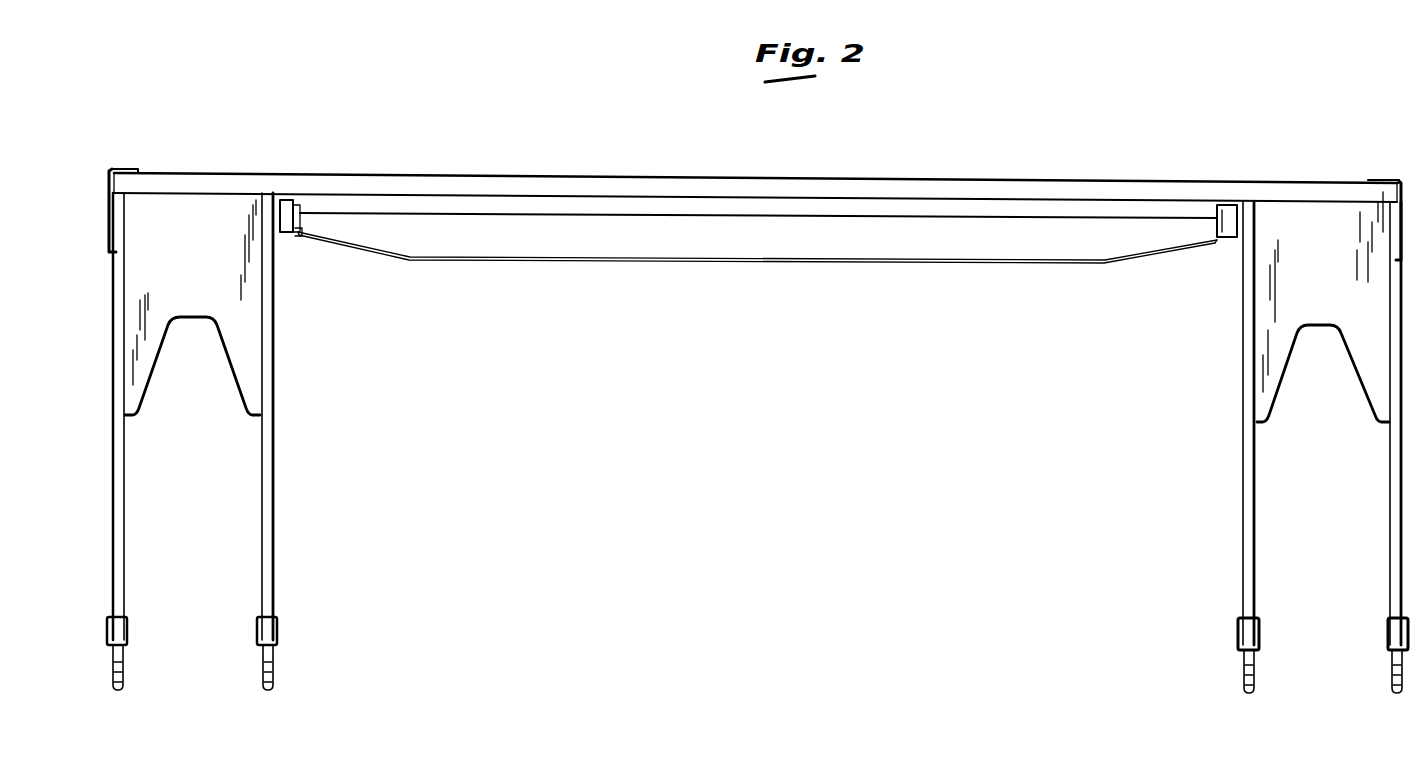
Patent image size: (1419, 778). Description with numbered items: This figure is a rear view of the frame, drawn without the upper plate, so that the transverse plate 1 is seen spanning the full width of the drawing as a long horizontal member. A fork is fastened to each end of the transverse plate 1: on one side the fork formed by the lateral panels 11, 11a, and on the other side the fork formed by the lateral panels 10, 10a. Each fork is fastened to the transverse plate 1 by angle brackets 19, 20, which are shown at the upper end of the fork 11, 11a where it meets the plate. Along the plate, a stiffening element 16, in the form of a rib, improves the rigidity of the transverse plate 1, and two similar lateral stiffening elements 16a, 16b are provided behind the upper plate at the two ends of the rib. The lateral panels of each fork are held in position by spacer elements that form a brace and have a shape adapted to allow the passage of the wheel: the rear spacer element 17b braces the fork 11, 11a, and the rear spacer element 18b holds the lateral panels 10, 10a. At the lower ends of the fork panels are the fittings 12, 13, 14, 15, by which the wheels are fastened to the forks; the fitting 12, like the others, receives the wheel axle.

The transverse plate 1 is at (644, 187).
The angle bracket 19 is at (108, 175).
The angle bracket 20 is at (290, 209).
The stiffening element 16 is at (652, 238).
The lateral stiffening element 16a is at (298, 233).
The lateral stiffening element 16b is at (1226, 238).
The rear spacer element 17b is at (248, 340).
The rear spacer element 18b is at (1265, 323).
The lateral panel of fork 11a is at (121, 532).
The lateral panel of fork 11 is at (276, 513).
The lateral panel of fork 10a is at (1243, 509).
The lateral panel of fork 10 is at (1392, 508).
The fitting 15 is at (125, 657).
The fitting 14 is at (275, 657).
The fitting 13 is at (1243, 660).
The fitting 12 is at (1392, 660).